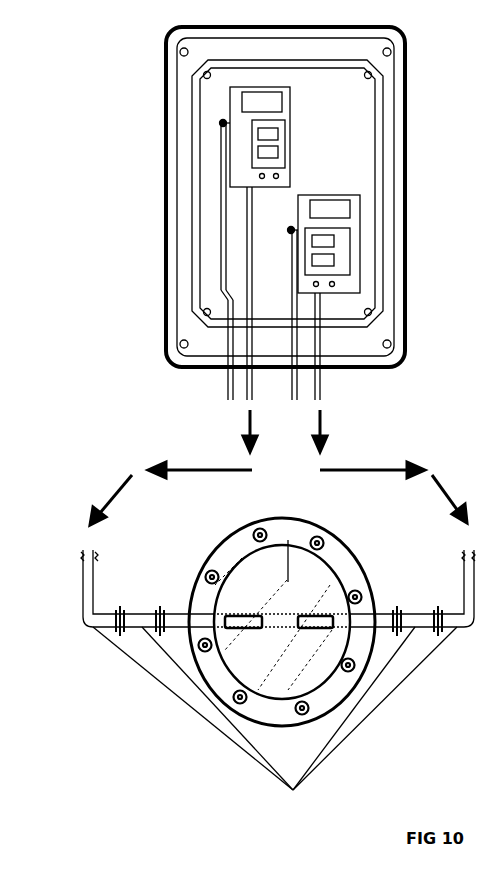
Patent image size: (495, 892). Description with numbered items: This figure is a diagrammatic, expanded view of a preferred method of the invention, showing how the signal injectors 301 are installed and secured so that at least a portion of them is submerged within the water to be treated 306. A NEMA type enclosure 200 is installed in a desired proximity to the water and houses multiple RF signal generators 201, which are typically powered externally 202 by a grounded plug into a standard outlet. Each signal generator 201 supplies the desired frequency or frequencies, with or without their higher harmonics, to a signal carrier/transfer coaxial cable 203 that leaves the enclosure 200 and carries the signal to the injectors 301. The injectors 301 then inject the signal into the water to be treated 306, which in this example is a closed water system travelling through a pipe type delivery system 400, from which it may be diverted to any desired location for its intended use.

The NEMA type enclosure 200 is at (166, 52).
The RF signal generator 201 is at (322, 223).
The external power 202 is at (298, 388).
The signal carrier/transfer wire or cable 203 is at (250, 382).
The signal injector 301 is at (302, 617).
The water to be treated 306 is at (288, 540).
The pipe type delivery system 400 is at (362, 568).